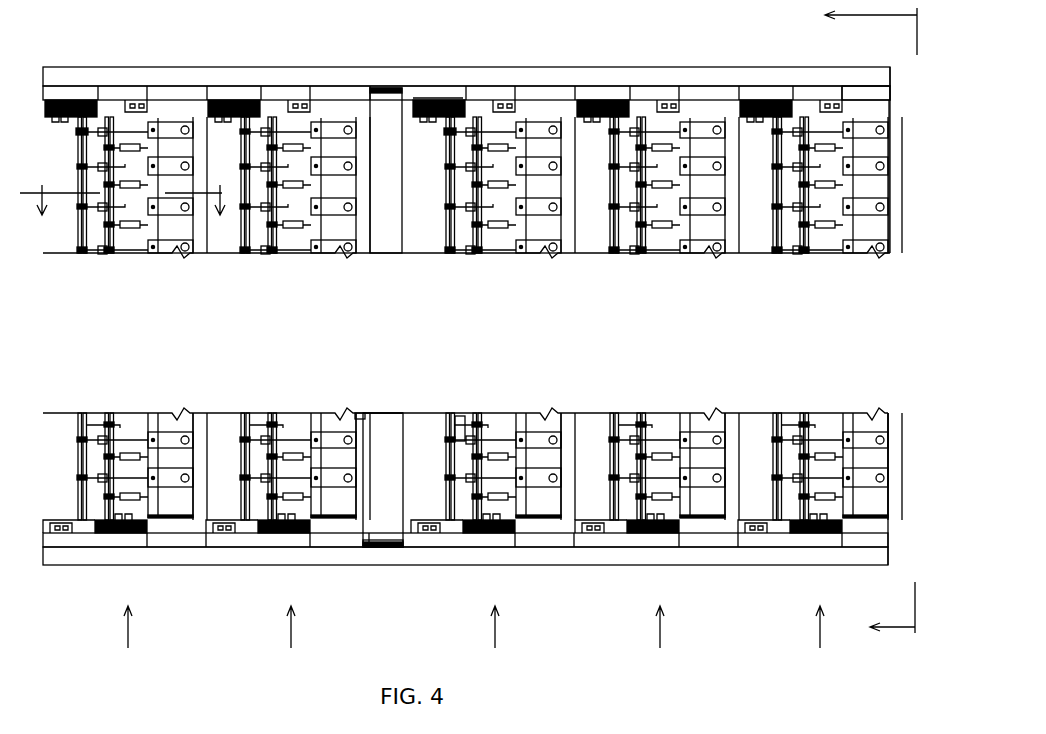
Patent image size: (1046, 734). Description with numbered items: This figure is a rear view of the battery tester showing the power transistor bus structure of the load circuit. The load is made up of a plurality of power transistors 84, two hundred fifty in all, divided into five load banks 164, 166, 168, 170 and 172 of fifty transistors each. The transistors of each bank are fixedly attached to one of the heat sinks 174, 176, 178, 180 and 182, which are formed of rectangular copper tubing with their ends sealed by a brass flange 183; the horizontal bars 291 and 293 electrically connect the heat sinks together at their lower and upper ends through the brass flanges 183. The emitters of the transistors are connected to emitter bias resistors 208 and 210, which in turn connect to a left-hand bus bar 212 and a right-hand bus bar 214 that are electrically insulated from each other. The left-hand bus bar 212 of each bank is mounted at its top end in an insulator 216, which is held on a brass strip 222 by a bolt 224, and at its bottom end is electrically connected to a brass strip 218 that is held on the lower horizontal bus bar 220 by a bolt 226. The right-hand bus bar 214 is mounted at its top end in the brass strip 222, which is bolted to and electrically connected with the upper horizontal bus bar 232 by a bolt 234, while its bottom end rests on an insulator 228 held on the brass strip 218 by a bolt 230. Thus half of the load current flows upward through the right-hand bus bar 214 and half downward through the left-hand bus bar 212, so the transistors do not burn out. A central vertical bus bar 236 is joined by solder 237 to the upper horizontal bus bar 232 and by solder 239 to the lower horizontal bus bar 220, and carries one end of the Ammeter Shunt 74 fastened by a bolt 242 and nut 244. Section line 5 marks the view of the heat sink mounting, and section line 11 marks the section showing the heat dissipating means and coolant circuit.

The section line 5- 5 is at (123, 215).
The section line 11- 11 is at (852, 324).
The Ammeter Shunt 74 is at (405, 413).
The power transistors 84 is at (388, 92).
The load bank 164 is at (128, 640).
The load bank 166 is at (293, 640).
The load bank 168 is at (497, 640).
The load bank 170 is at (662, 640).
The load bank 172 is at (820, 640).
The heat sink 174 is at (150, 413).
The heat sink 176 is at (312, 413).
The heat sink 178 is at (570, 413).
The heat sink 180 is at (720, 413).
The heat sink 182 is at (883, 413).
The brass flange 183 is at (890, 112).
The emitter bias resistor 208 is at (492, 125).
The emitter bias resistor 210 is at (280, 118).
The left-hand bus bar 212 is at (78, 168).
The right-hand bus bar 214 is at (150, 118).
The insulator 216 is at (43, 107).
The brass strip 218 is at (43, 540).
The lower horizontal bus bar 220 is at (305, 557).
The brass strip 222 is at (62, 95).
The bolt 224 is at (78, 133).
The bolt 226 is at (62, 525).
The insulator 228 is at (98, 535).
The bolt 230 is at (85, 518).
The upper horizontal bus bar 232 is at (203, 78).
The bolt 234 is at (128, 102).
The central vertical bus bar 236 is at (380, 258).
The solder 237 is at (415, 100).
The solder 239 is at (388, 527).
The bolt 242 is at (420, 413).
The nut 244 is at (362, 413).
The lower horizontal bar 291 is at (890, 545).
The upper horizontal bar 293 is at (878, 97).